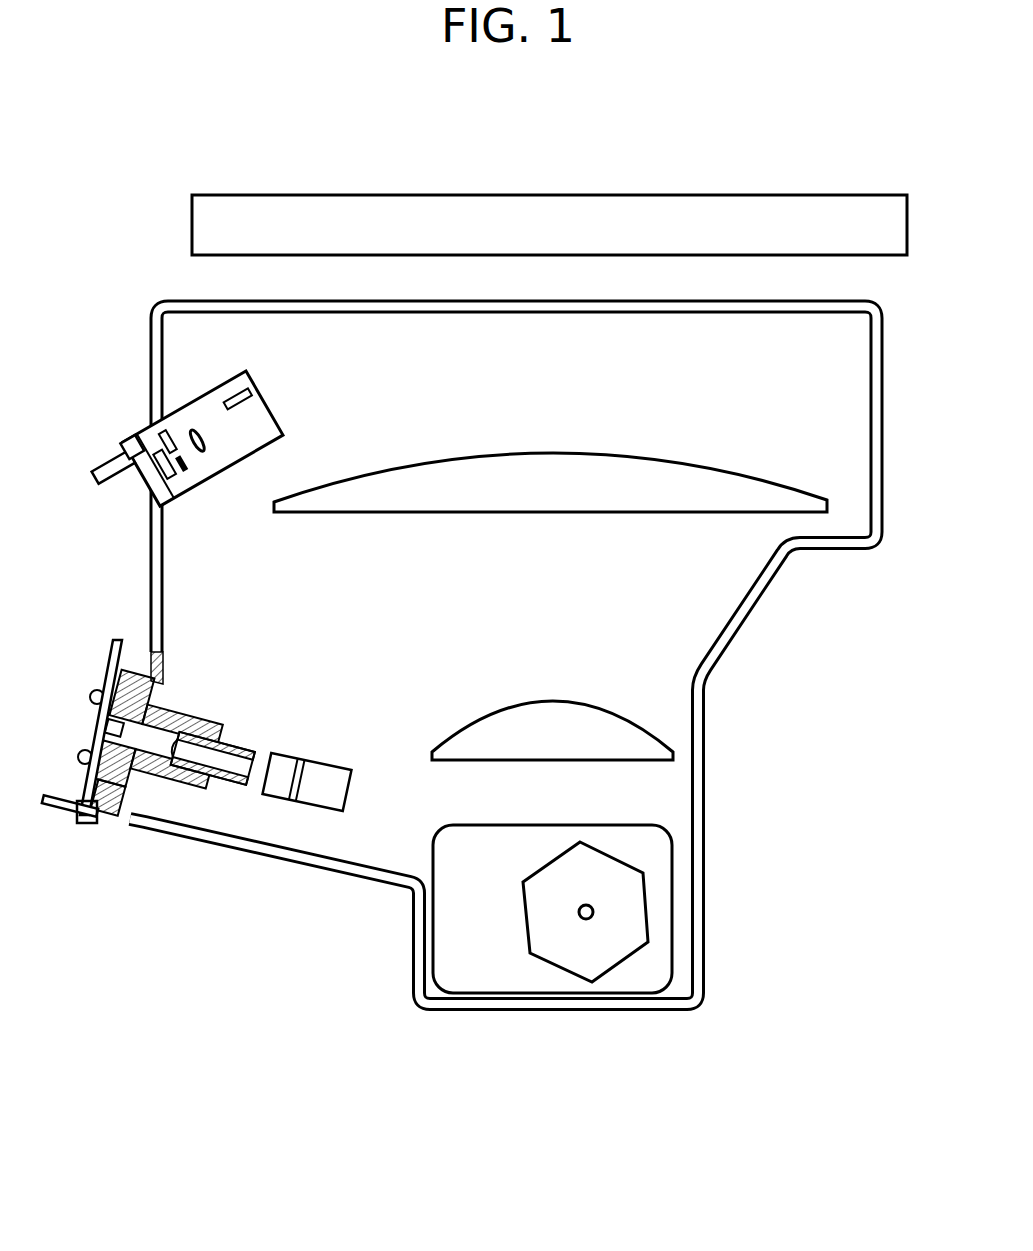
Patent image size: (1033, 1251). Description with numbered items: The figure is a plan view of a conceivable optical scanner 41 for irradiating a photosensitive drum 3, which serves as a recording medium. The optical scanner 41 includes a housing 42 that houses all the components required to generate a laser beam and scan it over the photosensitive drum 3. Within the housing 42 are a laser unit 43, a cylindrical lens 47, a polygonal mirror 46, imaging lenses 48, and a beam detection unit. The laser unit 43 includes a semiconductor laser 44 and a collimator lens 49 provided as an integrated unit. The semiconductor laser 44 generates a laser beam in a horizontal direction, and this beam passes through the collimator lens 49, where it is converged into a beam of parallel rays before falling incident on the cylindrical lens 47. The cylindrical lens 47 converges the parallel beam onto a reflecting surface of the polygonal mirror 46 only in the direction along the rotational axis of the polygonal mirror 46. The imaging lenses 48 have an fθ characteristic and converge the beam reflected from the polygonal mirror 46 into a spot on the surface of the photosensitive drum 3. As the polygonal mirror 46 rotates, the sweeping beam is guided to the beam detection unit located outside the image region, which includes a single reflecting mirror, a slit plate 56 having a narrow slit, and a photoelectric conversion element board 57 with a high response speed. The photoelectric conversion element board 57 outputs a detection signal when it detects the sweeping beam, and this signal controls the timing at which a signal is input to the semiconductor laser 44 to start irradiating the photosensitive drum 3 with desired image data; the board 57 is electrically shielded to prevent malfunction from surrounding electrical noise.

The photosensitive drum 3 is at (873, 192).
The optical scanner 41 is at (469, 699).
The housing 42 is at (697, 923).
The laser unit 43 is at (100, 840).
The semiconductor laser 44 is at (104, 735).
The polygonal mirror 46 is at (562, 942).
The cylindrical lens 47 is at (300, 790).
The imaging lenses 48 is at (620, 737).
The collimator lens 49 is at (205, 728).
The slit plate 56 is at (185, 464).
The photoelectric conversion element board 57 is at (150, 470).